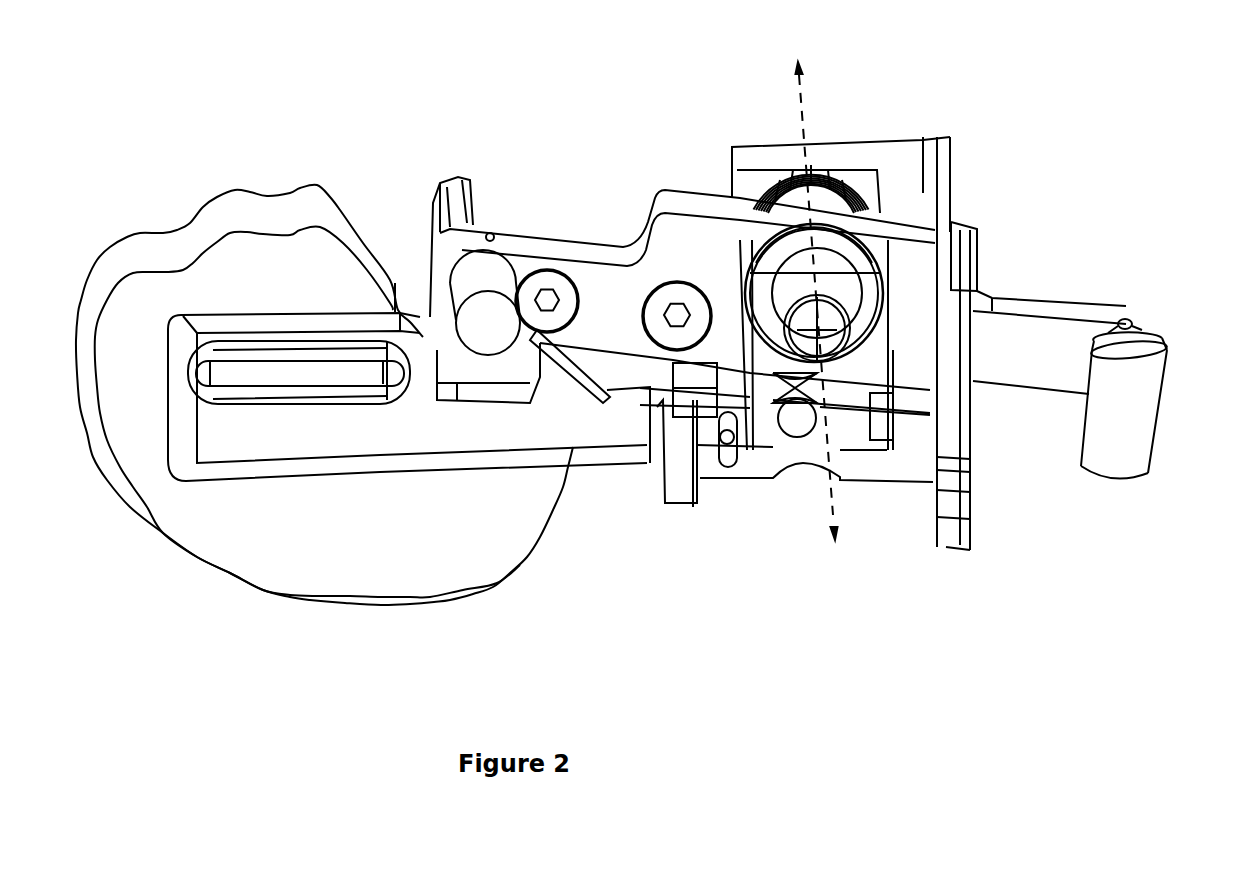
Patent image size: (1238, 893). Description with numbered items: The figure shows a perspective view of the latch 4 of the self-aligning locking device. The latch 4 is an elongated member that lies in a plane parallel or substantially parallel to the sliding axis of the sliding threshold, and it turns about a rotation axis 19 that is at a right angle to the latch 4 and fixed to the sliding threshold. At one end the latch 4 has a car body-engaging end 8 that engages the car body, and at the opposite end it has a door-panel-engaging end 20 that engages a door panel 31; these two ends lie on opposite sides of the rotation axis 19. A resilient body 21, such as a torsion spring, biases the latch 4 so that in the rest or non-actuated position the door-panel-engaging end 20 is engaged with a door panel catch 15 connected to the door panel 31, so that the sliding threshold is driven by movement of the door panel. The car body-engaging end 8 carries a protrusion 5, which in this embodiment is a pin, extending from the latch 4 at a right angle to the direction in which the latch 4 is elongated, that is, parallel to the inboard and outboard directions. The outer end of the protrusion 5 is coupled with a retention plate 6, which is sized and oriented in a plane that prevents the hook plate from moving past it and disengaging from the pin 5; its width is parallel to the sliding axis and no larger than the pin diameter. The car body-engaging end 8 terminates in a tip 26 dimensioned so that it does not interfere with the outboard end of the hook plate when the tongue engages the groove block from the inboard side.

The door panel 31 is at (280, 232).
The door panel catch 15 is at (354, 436).
The door-panel-engaging end 20 is at (502, 232).
The latch 4 is at (677, 185).
The resilient body 21 is at (847, 173).
The rotation axis 19 is at (787, 88).
The car body-engaging end 8 is at (1068, 295).
The protrusion 5 is at (1100, 339).
The tip 26 is at (1163, 334).
The retention plate 6 is at (1141, 443).